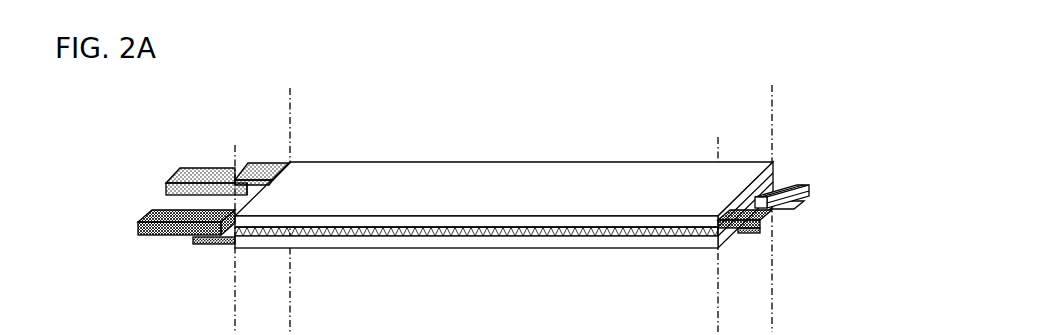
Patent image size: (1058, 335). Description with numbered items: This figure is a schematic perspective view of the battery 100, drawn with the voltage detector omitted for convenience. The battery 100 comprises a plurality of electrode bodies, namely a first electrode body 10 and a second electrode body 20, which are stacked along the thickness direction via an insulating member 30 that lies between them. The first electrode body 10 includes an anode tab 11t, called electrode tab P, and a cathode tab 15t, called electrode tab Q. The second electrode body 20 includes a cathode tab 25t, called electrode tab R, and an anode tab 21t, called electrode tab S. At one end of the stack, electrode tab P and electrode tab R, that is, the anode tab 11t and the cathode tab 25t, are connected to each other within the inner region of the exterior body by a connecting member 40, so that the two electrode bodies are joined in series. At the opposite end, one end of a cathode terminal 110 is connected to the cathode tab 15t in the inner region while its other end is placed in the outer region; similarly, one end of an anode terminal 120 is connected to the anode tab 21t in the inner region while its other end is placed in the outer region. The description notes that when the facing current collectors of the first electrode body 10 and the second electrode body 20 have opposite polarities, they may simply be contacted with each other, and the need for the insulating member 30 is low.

The battery 100 is at (743, 84).
The first electrode body 10 is at (428, 177).
The second electrode body 20 is at (430, 242).
The insulating member 30 is at (508, 233).
The connecting member 40 is at (797, 182).
The cathode terminal 110 is at (192, 173).
The anode terminal 120 is at (155, 205).
The cathode tab 15t is at (262, 167).
The anode tab 21t is at (207, 248).
The anode tab 11t is at (749, 234).
The cathode tab 25t is at (794, 207).